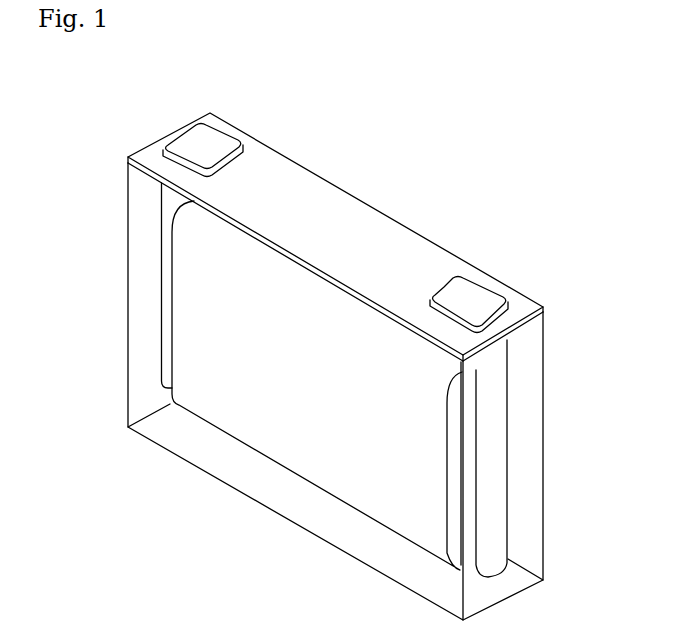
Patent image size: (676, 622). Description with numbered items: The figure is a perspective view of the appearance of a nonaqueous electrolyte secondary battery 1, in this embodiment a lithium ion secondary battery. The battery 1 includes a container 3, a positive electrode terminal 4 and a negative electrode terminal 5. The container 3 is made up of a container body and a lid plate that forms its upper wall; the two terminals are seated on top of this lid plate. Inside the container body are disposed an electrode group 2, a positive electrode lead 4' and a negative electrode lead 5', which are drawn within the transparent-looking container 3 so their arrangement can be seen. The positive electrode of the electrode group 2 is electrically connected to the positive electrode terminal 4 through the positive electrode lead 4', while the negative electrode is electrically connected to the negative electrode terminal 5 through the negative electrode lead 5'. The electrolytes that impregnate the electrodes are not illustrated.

The nonaqueous electrolyte secondary battery 1 is at (445, 197).
The electrode group 2 is at (301, 387).
The container 3 is at (128, 251).
The positive electrode terminal 4 is at (203, 122).
The positive electrode lead 4' is at (132, 285).
The negative electrode terminal 5 is at (469, 278).
The negative electrode lead 5' is at (527, 458).